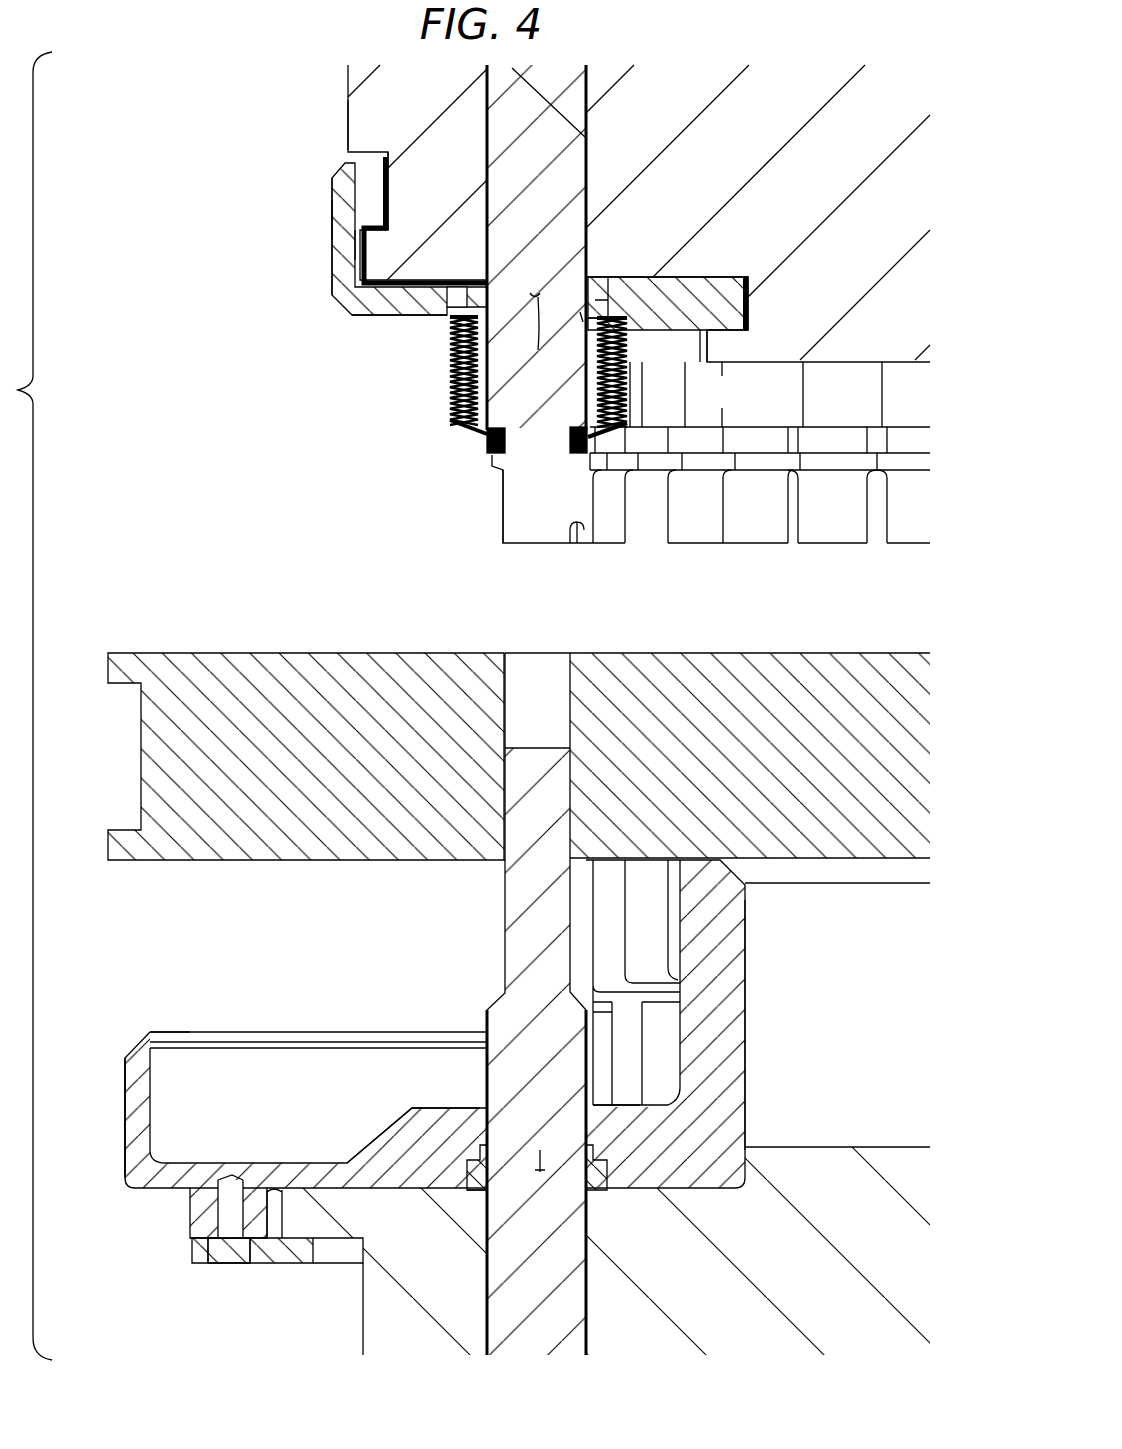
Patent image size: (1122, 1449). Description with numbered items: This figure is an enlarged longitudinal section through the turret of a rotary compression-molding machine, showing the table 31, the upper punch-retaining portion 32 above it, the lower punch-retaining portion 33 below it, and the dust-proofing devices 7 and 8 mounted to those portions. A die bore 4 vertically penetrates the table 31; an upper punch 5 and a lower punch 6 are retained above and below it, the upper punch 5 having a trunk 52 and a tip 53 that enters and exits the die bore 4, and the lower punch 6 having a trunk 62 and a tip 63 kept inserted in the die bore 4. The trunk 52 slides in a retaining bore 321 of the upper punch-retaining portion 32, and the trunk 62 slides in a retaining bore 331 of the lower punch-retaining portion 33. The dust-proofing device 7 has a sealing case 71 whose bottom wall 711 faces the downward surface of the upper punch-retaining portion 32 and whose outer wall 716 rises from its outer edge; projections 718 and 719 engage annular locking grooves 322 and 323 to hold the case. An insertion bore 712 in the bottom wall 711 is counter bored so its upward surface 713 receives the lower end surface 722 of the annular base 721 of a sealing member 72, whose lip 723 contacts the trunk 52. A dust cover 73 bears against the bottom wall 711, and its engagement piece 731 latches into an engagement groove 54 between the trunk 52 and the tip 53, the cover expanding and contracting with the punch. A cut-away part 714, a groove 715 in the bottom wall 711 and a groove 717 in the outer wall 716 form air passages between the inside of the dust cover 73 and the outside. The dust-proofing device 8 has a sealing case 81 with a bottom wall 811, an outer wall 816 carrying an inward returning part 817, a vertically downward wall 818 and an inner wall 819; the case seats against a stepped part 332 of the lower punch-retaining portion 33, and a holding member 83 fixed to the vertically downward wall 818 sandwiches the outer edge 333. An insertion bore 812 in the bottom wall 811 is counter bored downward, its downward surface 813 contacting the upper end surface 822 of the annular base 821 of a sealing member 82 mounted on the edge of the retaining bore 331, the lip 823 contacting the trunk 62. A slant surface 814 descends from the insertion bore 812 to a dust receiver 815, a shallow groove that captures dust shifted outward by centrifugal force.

The die bore 4 is at (572, 751).
The upper punch 5 is at (592, 90).
The lower punch 6 is at (592, 1330).
The dust-proofing device 7 is at (372, 414).
The dust-proofing device 8 is at (372, 992).
The table 31 is at (316, 650).
The upper punch-retaining portion 32 is at (346, 130).
The lower punch-retaining portion 33 is at (362, 1287).
The trunk 52 is at (590, 175).
The tip 53 is at (500, 514).
The engagement groove 54 is at (486, 442).
The trunk 62 is at (590, 1290).
The tip 63 is at (503, 870).
The sealing case 71 is at (331, 262).
The sealing member 72 is at (612, 300).
The dust cover 73 is at (448, 382).
The sealing case 81 is at (124, 1137).
The sealing member 82 is at (612, 1170).
The holding member 83 is at (250, 1265).
The retaining bore 321 is at (590, 128).
The locking groove 322 is at (385, 178).
The locking groove 323 is at (722, 394).
The retaining bore 331 is at (485, 1306).
The stepped part 332 is at (858, 1147).
The outer edge 333 is at (315, 1196).
The bottom wall 711 is at (612, 300).
The insertion bore 712 is at (537, 338).
The upward surface 713 is at (592, 300).
The cut-away part 714 is at (457, 300).
The groove 715 is at (398, 302).
The outer wall 716 is at (331, 225).
The groove 717 is at (352, 242).
The projection 718 is at (390, 205).
The projection 719 is at (750, 302).
The annular base 721 is at (495, 295).
The lower end surface 722 is at (640, 330).
The lip 723 is at (560, 345).
The engagement piece 731 is at (512, 462).
The bottom wall 811 is at (428, 1100).
The insertion bore 812 is at (540, 1150).
The downward surface 813 is at (595, 1185).
The slant surface 814 is at (385, 1128).
The dust receiver 815 is at (258, 1178).
The outer wall 816 is at (124, 1110).
The returning part 817 is at (178, 1034).
The vertically downward wall 818 is at (188, 1216).
The inner wall 819 is at (750, 1010).
The annular base 821 is at (475, 1192).
The upper end surface 822 is at (607, 1137).
The lip 823 is at (478, 1150).